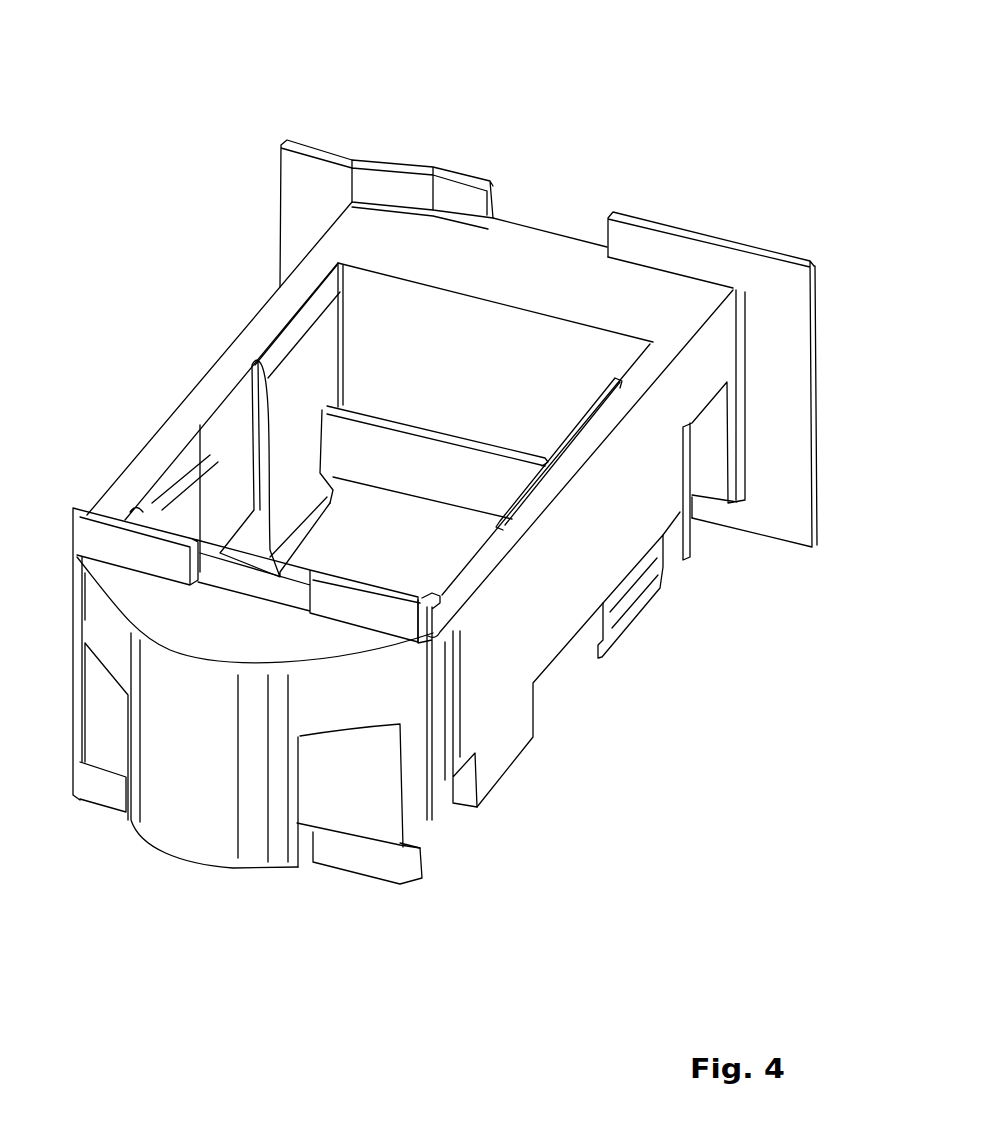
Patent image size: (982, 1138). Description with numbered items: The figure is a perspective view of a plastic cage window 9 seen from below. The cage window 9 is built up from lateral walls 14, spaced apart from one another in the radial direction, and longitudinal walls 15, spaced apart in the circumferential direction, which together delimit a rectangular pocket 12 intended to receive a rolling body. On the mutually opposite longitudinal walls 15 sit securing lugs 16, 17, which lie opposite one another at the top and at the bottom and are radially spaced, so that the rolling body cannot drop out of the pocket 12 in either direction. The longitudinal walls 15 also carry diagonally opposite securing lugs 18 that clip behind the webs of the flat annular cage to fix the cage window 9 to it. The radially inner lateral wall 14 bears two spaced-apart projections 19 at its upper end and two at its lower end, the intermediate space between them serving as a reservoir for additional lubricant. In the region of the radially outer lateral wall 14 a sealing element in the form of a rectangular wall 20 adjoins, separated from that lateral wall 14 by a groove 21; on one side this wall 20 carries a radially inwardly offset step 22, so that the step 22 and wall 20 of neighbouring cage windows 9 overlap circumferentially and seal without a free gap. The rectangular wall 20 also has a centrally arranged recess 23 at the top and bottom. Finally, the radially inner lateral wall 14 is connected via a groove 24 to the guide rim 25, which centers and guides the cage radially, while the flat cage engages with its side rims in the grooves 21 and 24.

The cage window 9 is at (656, 122).
The pocket 12 is at (410, 573).
The lateral wall 14 is at (430, 750).
The longitudinal wall 15 is at (205, 400).
The securing lug 16 is at (327, 473).
The securing lug 17 is at (290, 333).
The securing lug 18 is at (628, 592).
The projection 19 is at (103, 535).
The rectangular wall 20 is at (775, 275).
The groove 21 is at (720, 447).
The step 22 is at (318, 172).
The recess 23 is at (552, 220).
The groove 24 is at (334, 793).
The guide rim 25 is at (207, 770).